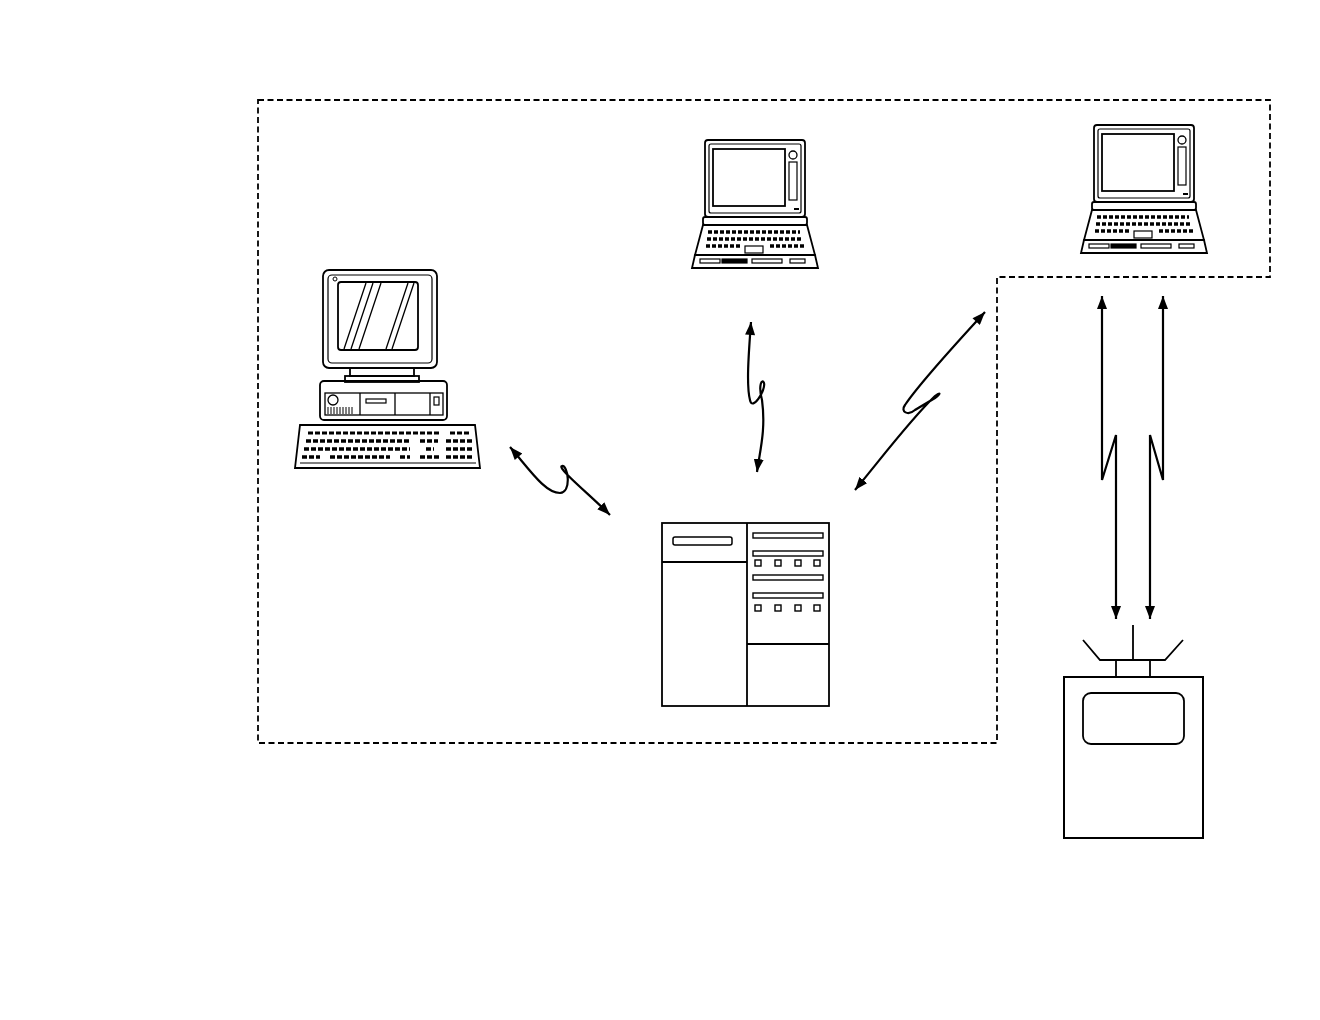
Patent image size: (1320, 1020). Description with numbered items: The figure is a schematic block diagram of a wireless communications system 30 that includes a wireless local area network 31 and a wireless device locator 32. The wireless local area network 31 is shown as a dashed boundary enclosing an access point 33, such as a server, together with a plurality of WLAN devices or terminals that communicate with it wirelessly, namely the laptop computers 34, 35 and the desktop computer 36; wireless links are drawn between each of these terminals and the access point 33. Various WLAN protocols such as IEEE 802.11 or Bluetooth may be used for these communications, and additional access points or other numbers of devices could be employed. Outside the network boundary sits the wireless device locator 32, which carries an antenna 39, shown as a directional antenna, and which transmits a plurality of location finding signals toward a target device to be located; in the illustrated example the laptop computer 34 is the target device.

The wireless communications system 30 is at (234, 78).
The wireless local area network 31 is at (258, 288).
The wireless device locator 32 is at (1203, 760).
The access point 33 is at (662, 615).
The laptop computer 34 is at (1094, 172).
The laptop computer 35 is at (805, 170).
The desktop computer 36 is at (437, 315).
The antenna 39 is at (1175, 650).